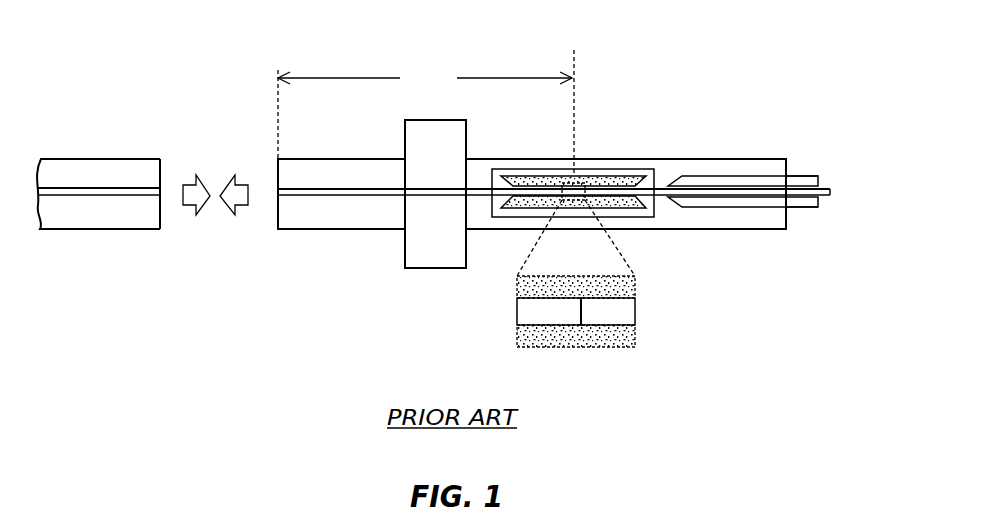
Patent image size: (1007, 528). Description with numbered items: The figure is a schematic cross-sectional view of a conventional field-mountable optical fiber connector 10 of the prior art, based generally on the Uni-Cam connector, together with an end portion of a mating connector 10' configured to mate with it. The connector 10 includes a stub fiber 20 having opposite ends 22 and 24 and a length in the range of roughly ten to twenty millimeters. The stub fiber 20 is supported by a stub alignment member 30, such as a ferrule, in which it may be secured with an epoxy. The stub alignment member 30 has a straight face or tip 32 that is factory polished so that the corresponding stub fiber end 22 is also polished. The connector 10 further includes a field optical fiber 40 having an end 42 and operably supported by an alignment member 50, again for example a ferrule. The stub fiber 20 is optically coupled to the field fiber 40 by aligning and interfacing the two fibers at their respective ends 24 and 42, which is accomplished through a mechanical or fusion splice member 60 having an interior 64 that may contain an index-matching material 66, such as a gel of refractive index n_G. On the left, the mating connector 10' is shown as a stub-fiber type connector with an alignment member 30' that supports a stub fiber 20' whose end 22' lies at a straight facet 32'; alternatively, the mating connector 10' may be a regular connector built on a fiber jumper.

The optical fiber connector 10 is at (531, 205).
The mating connector 10' is at (114, 151).
The stub fiber 20 is at (429, 263).
The stub fiber 20' is at (99, 232).
The stub fiber end 22 is at (526, 221).
The stub fiber end 22' is at (115, 157).
The stub fiber end 24 is at (582, 310).
The stub alignment member 30 is at (532, 168).
The alignment member 30' is at (98, 150).
The tip 32 is at (293, 216).
The straight facet 32' is at (151, 215).
The field optical fiber 40 is at (742, 187).
The field fiber end 42 is at (580, 312).
The alignment member 50 is at (807, 177).
The splice member 60 is at (508, 170).
The interior 64 is at (534, 170).
The index-matching material 66 is at (592, 182).